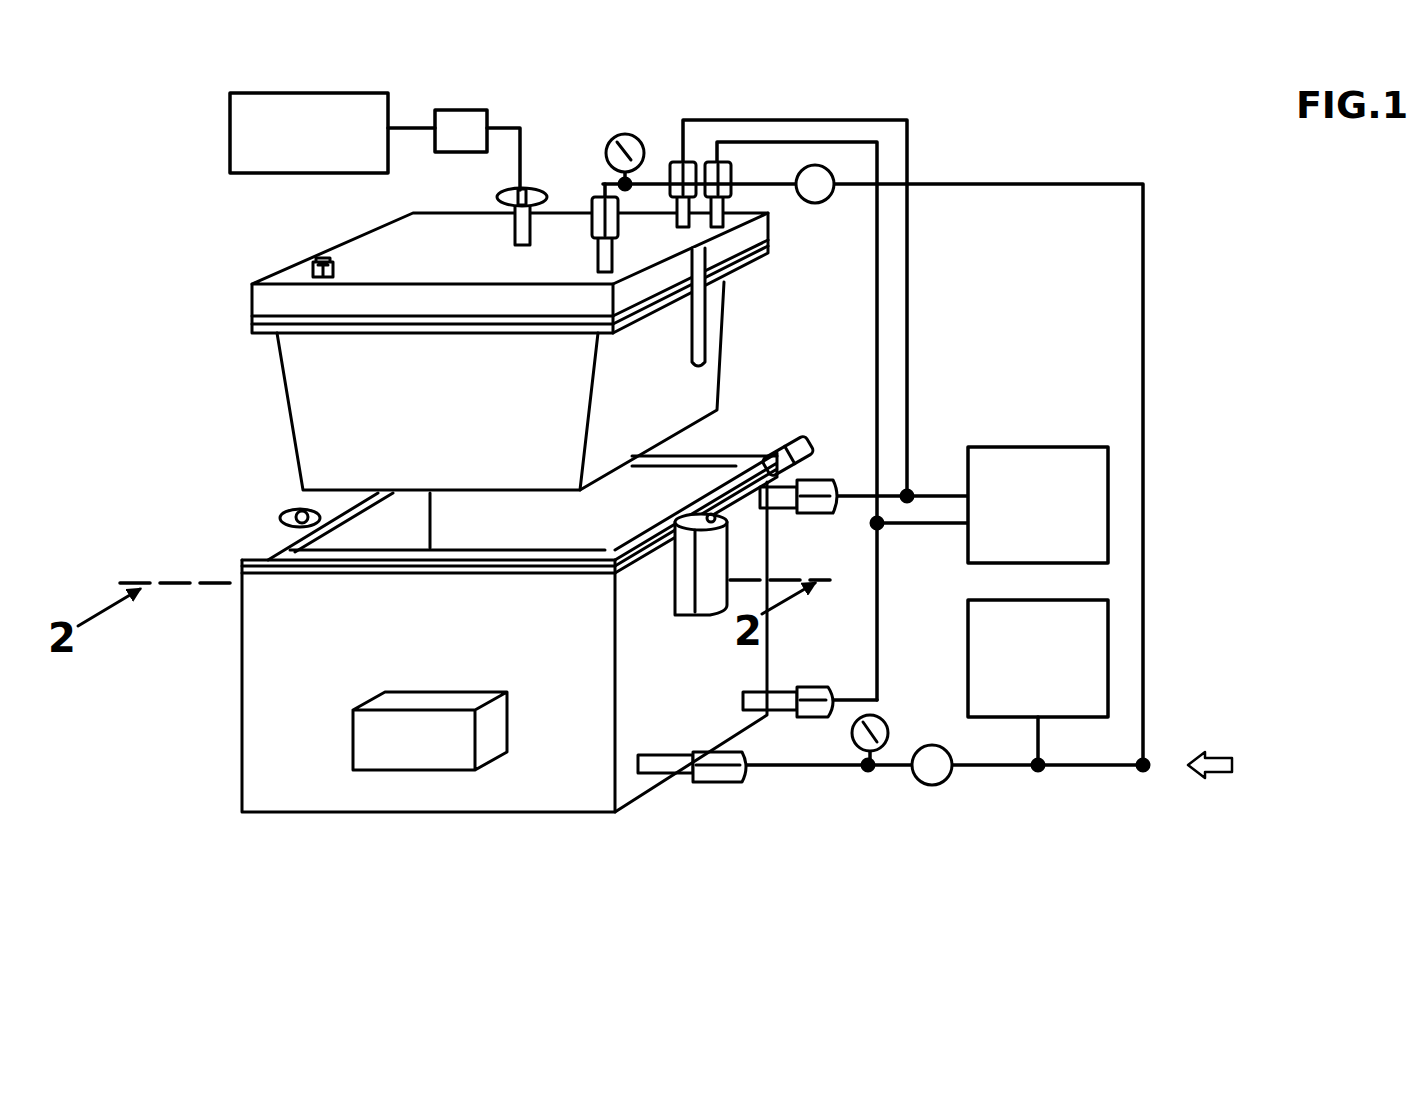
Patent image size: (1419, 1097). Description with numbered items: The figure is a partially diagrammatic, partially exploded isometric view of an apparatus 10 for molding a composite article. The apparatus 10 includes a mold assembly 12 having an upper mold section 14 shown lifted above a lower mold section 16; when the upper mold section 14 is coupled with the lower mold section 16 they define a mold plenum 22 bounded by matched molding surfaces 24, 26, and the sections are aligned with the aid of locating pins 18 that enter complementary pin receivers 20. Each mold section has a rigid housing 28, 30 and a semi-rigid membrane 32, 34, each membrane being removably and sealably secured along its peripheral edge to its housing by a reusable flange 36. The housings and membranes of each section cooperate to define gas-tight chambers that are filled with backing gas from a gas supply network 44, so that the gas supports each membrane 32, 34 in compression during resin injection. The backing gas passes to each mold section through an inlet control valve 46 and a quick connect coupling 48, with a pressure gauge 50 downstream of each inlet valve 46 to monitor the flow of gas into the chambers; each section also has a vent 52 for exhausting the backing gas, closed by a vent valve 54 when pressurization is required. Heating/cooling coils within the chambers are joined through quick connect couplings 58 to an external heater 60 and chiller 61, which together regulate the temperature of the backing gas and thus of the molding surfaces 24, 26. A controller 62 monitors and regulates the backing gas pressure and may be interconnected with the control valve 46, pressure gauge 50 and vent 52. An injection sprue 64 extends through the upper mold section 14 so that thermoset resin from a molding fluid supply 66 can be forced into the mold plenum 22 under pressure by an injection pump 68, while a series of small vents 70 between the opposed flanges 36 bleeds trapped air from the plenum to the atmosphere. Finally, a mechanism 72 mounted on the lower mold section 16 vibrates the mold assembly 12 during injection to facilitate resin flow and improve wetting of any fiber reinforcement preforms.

The apparatus 10 is at (1052, 135).
The mold assembly 12 is at (180, 470).
The upper mold section 14 is at (222, 268).
The lower mold section 16 is at (451, 660).
The locating pins 18 is at (705, 343).
The pin receivers 20 is at (288, 513).
The mold plenum 22 is at (656, 490).
The molding surface 24 is at (693, 403).
The molding surface 26 is at (352, 548).
The rigid housing 28 is at (248, 316).
The rigid housing 30 is at (238, 697).
The semi-rigid membrane 32 is at (276, 381).
The semi-rigid membrane 34 is at (385, 518).
The flange 36 is at (774, 249).
The gas supply network 44 is at (1162, 708).
The inlet control valve 46 is at (822, 200).
The quick connect coupling 48 is at (618, 222).
The pressure gauge 50 is at (619, 136).
The vent 52 is at (314, 259).
The vent valve 54 is at (323, 257).
The quick connect coupling 58 is at (728, 170).
The heater unit 60 is at (1104, 505).
The chiller unit 61 is at (1112, 484).
The controller 62 is at (1112, 633).
The injection sprue 64 is at (497, 195).
The molding fluid supply 66 is at (233, 161).
The injection pump 68 is at (461, 110).
The small vents 70 is at (276, 554).
The vibrating mechanism 72 is at (400, 774).